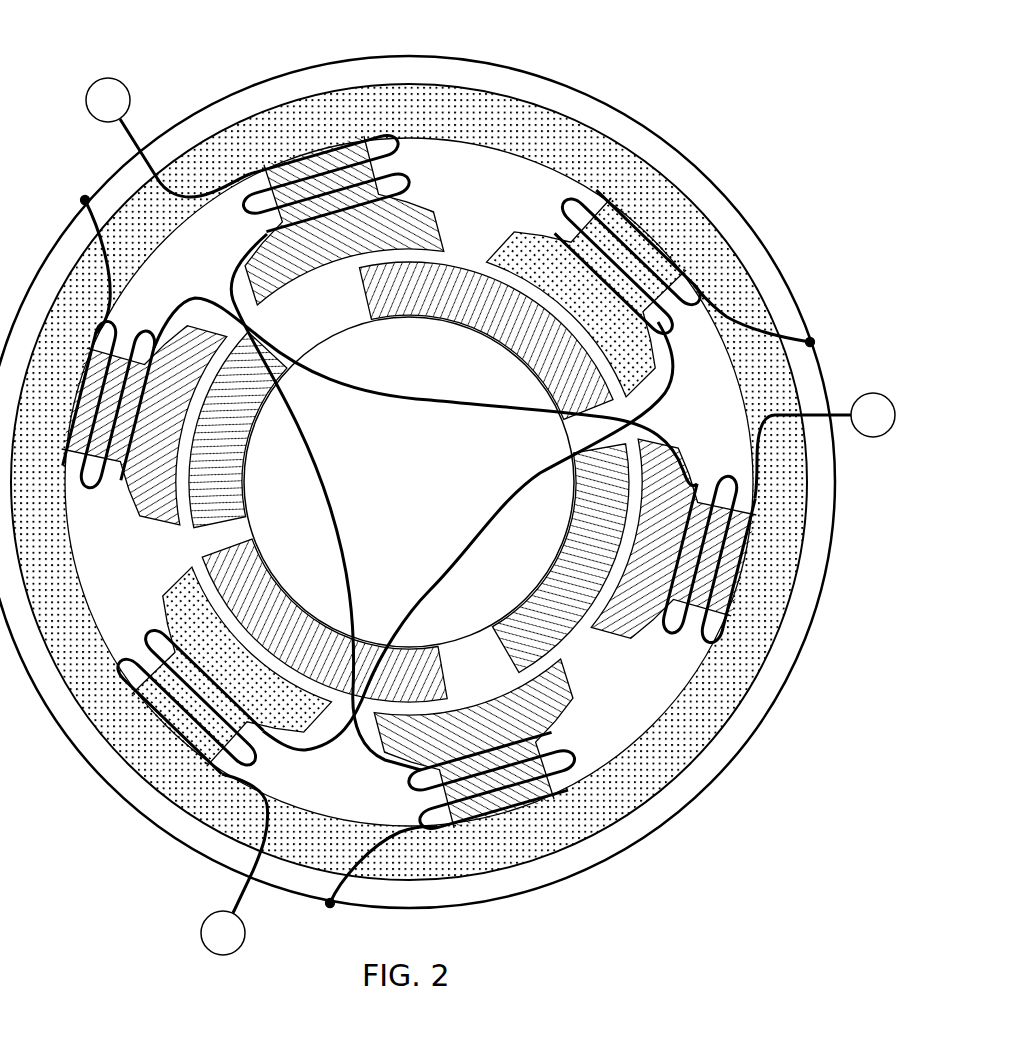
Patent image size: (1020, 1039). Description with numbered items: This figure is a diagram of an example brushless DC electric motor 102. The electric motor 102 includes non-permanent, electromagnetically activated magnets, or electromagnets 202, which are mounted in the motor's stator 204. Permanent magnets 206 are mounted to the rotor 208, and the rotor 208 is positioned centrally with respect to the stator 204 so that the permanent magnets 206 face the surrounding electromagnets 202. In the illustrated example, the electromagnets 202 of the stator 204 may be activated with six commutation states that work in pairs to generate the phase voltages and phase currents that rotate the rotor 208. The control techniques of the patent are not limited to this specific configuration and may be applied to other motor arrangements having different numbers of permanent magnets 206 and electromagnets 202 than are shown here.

The electric motor 102 is at (716, 74).
The electromagnets 202 is at (428, 204).
The stator 204 is at (549, 103).
The permanent magnets 206 is at (462, 332).
The rotor 208 is at (431, 493).